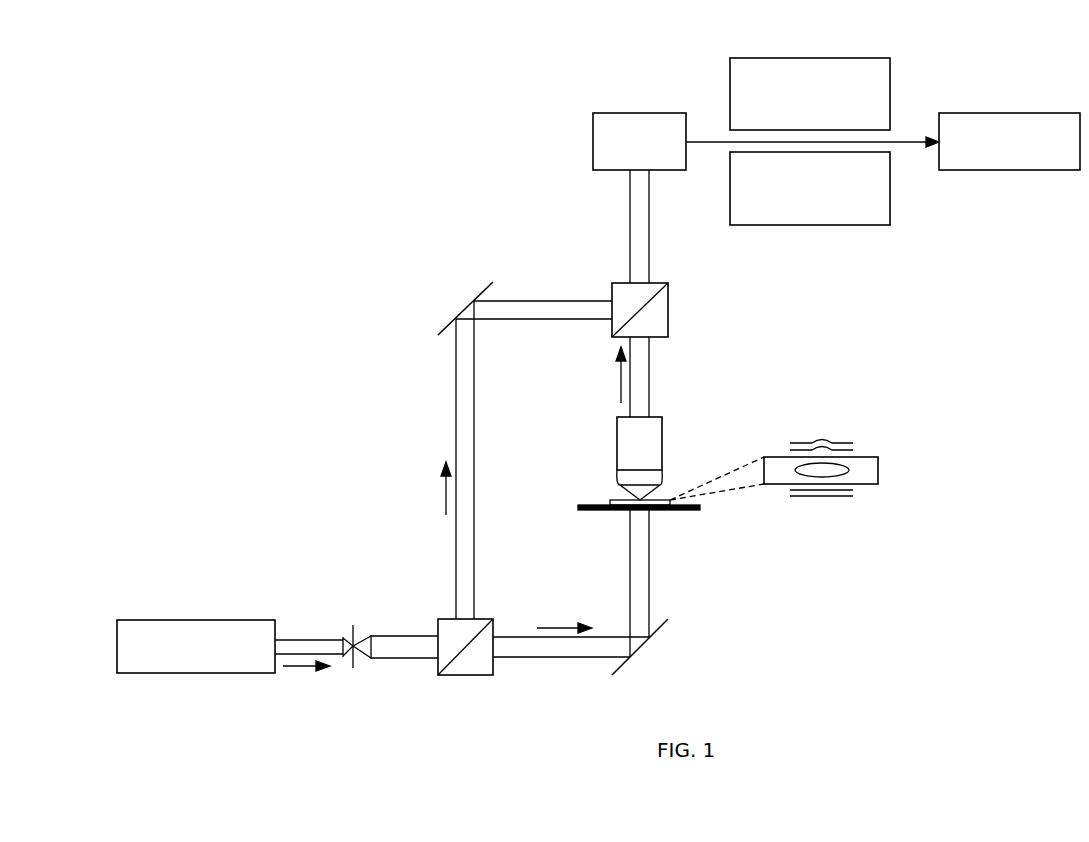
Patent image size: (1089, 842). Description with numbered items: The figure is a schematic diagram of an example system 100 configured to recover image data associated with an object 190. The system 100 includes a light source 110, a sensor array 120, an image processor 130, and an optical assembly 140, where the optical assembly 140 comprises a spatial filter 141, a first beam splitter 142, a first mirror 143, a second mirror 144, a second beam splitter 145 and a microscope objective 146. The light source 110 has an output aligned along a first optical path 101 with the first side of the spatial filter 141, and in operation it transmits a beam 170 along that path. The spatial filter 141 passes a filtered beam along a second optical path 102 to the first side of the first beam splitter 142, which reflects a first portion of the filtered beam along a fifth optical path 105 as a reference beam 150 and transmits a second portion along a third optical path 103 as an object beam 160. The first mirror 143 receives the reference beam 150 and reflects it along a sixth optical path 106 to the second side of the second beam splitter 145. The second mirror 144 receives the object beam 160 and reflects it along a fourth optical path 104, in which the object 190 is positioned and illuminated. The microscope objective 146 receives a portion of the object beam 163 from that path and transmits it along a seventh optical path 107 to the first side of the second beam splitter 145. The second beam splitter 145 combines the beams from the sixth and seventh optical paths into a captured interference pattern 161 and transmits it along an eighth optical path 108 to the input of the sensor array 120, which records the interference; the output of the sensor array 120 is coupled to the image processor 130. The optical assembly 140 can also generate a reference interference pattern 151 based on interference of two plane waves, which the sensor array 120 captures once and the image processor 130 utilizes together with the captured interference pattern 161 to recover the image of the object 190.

The system 100 is at (190, 103).
The first optical path 101 is at (283, 638).
The second optical path 102 is at (400, 636).
The third optical path 103 is at (565, 657).
The fourth optical path 104 is at (650, 592).
The fifth optical path 105 is at (478, 503).
The sixth optical path 106 is at (522, 319).
The seventh optical path 107 is at (649, 400).
The eighth optical path 108 is at (630, 254).
The light source 110 is at (190, 620).
The sensor array 120 is at (608, 172).
The image processor 130 is at (1010, 172).
The optical assembly 140 is at (435, 418).
The spatial filter 141 is at (357, 628).
The first beam splitter 142 is at (480, 619).
The first mirror 143 is at (456, 317).
The second mirror 144 is at (652, 646).
The second beam splitter 145 is at (668, 337).
The microscope objective 146 is at (617, 430).
The reference beam 150 is at (446, 508).
The reference interference pattern 151 is at (730, 68).
The object beam 160 is at (568, 612).
The captured interference pattern 161 is at (817, 226).
The received portion of the object beam 163 is at (616, 375).
The beam 170 is at (300, 668).
The object 190 is at (655, 512).